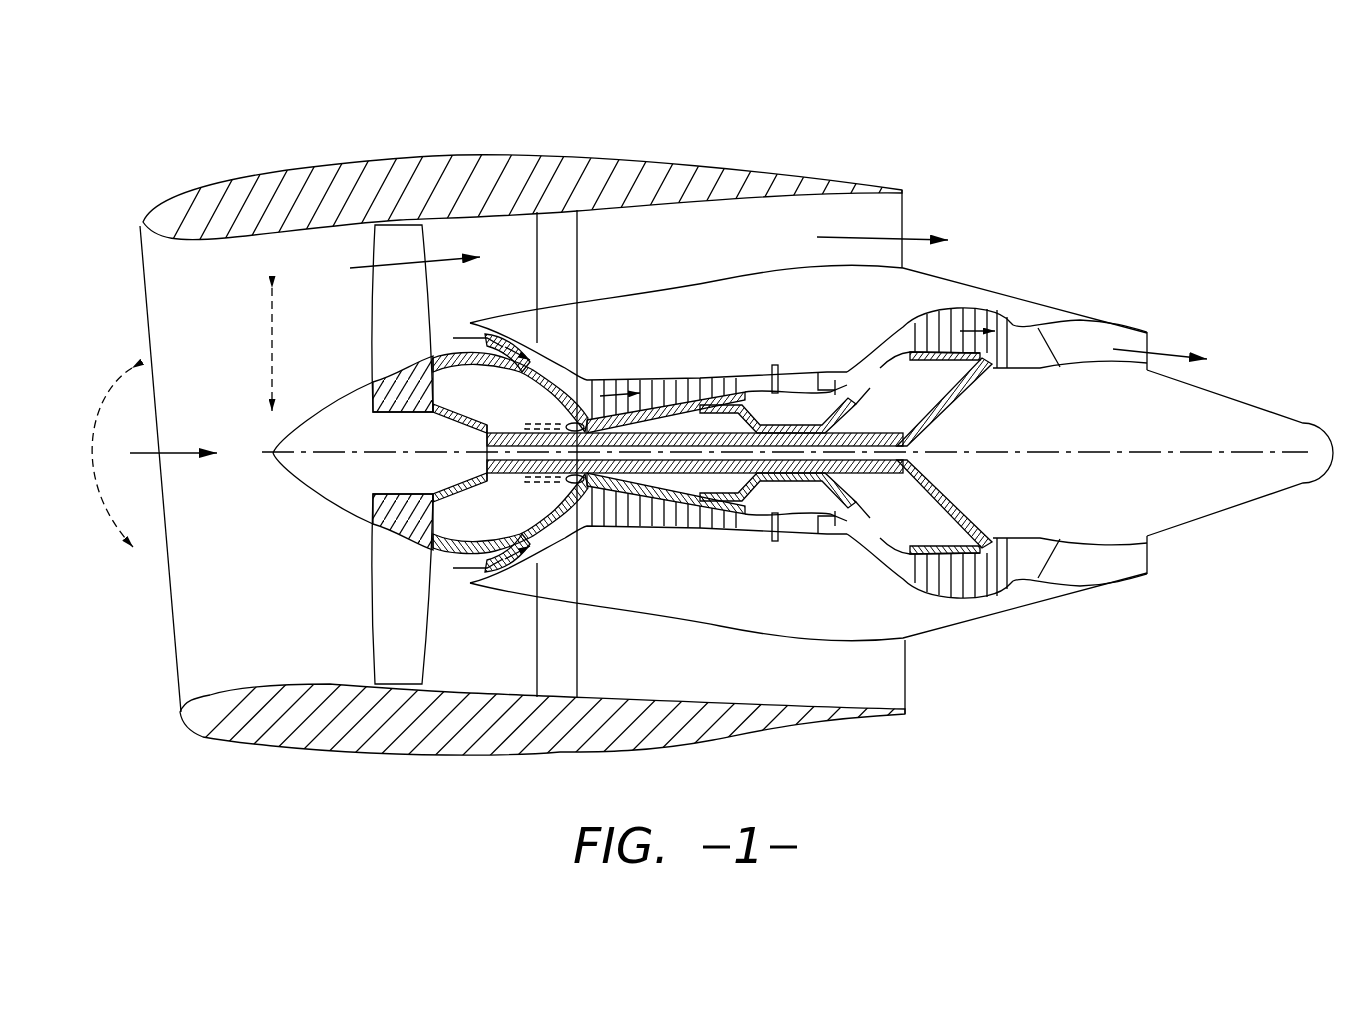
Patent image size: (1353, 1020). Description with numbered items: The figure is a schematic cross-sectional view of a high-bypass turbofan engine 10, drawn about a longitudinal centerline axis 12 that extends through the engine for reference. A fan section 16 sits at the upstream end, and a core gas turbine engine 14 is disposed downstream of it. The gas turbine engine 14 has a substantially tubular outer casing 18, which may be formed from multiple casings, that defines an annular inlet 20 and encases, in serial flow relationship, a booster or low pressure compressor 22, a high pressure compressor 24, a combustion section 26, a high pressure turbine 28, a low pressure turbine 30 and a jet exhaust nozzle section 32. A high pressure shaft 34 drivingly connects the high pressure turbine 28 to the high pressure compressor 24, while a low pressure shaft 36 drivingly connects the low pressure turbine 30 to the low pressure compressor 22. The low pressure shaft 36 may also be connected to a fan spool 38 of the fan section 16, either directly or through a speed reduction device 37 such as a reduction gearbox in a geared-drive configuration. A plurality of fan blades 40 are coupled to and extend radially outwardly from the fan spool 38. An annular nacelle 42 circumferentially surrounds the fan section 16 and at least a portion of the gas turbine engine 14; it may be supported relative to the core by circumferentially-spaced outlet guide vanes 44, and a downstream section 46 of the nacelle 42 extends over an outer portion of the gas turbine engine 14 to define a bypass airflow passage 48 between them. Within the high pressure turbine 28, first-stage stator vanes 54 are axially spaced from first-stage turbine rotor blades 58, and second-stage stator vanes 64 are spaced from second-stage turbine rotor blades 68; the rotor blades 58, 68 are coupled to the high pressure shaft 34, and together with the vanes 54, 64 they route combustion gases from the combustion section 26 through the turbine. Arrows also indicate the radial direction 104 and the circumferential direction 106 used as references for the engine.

The turbofan engine 10 is at (1134, 222).
The longitudinal centerline axis 12 is at (1063, 450).
The gas turbine engine 14 is at (745, 340).
The fan section 16 is at (447, 148).
The outer casing 18 is at (760, 637).
The annular inlet 20 is at (470, 572).
The low pressure compressor 22 is at (543, 547).
The high pressure compressor 24 is at (608, 517).
The combustion section 26 is at (793, 517).
The high pressure turbine 28 is at (868, 530).
The low pressure turbine 30 is at (997, 597).
The jet exhaust nozzle section 32 is at (1150, 340).
The high pressure shaft 34 is at (841, 405).
The low pressure shaft 36 is at (525, 428).
The speed reduction device 37 is at (560, 426).
The fan spool 38 is at (403, 413).
The fan blades 40 is at (370, 632).
The nacelle 42 is at (433, 755).
The outlet guide vanes 44 is at (577, 233).
The downstream section of the nacelle 46 is at (727, 167).
The bypass airflow passage 48 is at (714, 254).
The stator vanes 54 is at (822, 523).
The turbine rotor blades 58 is at (832, 533).
The stator vanes 64 is at (835, 533).
The turbine rotor blades 68 is at (850, 533).
The radial direction 104 is at (272, 348).
The circumferential direction 106 is at (100, 508).